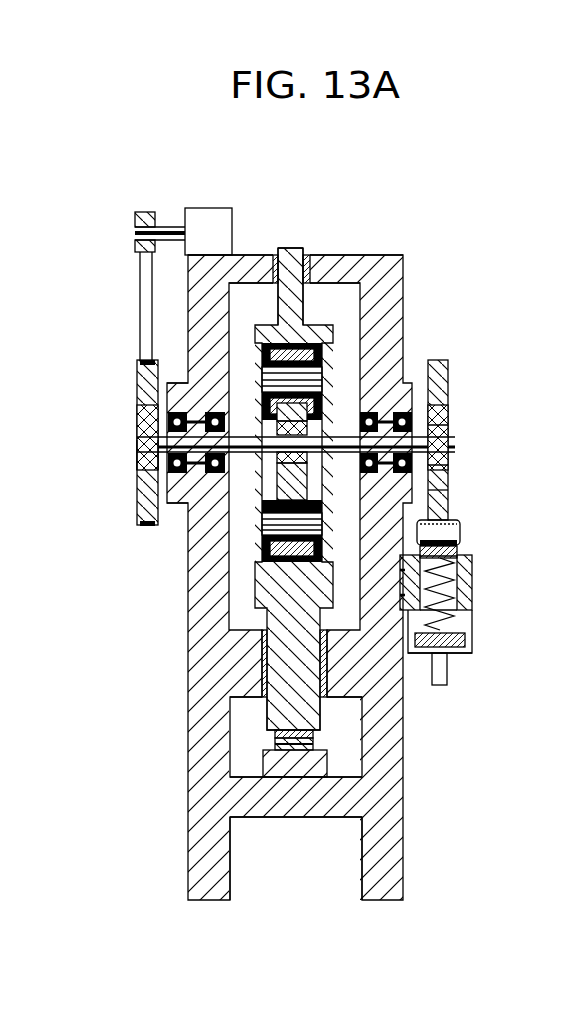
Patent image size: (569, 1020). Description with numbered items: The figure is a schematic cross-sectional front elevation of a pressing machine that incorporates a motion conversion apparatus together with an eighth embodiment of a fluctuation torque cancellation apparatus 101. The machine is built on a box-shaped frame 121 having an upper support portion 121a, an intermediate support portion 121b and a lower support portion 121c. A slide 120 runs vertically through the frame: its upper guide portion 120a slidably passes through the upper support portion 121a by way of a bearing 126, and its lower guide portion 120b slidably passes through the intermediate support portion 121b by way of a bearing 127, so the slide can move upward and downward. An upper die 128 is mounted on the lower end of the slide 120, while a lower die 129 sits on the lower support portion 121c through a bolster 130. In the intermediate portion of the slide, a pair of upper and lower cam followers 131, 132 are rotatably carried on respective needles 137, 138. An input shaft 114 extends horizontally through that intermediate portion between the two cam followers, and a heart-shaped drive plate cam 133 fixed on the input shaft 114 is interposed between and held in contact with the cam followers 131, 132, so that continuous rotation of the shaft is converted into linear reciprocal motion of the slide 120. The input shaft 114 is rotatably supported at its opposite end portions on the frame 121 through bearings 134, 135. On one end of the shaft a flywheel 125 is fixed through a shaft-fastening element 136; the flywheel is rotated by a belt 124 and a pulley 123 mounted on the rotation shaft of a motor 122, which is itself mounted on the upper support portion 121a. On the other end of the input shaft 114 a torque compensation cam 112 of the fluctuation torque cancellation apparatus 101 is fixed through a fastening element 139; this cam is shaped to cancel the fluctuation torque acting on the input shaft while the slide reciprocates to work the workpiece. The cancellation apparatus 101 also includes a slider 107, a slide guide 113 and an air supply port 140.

The fluctuation torque cancellation apparatus 101 is at (472, 632).
The slider 107 is at (457, 548).
The torque compensation cam 112 is at (448, 383).
The slide guide 113 is at (470, 593).
The input shaft 114 is at (210, 495).
The slide 120 is at (260, 590).
The upper guide portion 120a is at (282, 247).
The lower guide portion 120b is at (320, 715).
The frame 121 is at (403, 855).
The upper support portion 121a is at (368, 256).
The intermediate support portion 121b is at (362, 705).
The lower support portion 121c is at (313, 817).
The motor 122 is at (208, 208).
The pulley 123 is at (137, 230).
The belt 124 is at (140, 286).
The flywheel 125 is at (140, 365).
The bearing 126 is at (308, 257).
The bearing 127 is at (265, 650).
The upper die 128 is at (278, 737).
The lower die 129 is at (280, 755).
The bolster 130 is at (330, 760).
The upper cam follower 131 is at (325, 352).
The lower cam follower 132 is at (205, 565).
The heart-shaped drive plate cam 133 is at (375, 395).
The bearing 134 is at (175, 405).
The bearing 135 is at (405, 410).
The shaft-fastening element 136 is at (137, 460).
The needle 137 is at (250, 355).
The needle 138 is at (333, 508).
The fastening element 139 is at (447, 423).
The air supply port 140 is at (447, 673).